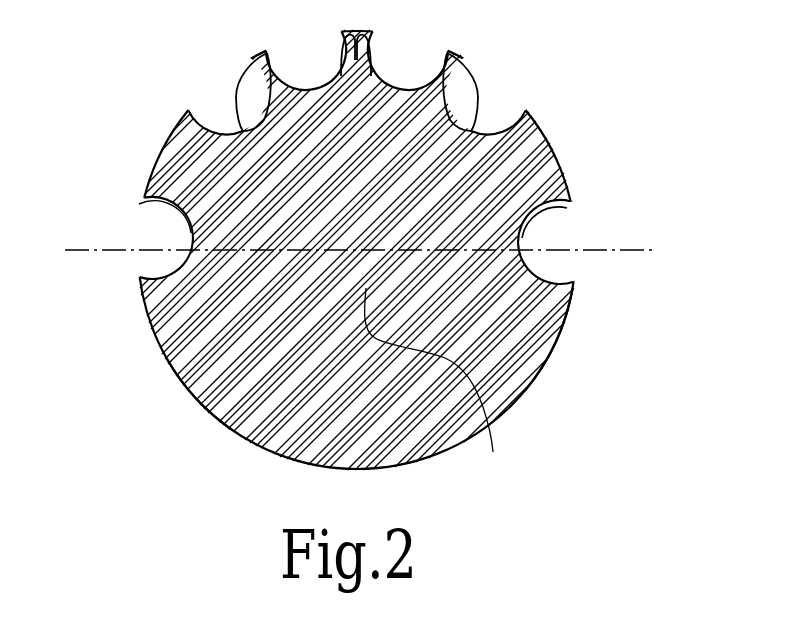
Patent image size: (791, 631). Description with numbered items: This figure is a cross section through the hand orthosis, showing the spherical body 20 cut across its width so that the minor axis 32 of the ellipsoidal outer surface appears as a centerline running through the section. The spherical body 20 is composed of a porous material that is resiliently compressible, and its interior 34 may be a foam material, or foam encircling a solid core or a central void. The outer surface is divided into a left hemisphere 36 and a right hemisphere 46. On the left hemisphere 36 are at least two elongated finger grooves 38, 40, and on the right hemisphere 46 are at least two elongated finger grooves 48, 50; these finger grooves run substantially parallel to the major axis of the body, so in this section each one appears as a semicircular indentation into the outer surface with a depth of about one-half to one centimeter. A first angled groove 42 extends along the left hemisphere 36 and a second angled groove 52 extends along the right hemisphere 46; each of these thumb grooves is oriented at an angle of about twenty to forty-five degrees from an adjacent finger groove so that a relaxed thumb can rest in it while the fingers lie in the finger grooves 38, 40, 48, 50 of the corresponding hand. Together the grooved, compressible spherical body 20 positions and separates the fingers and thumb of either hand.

The spherical body 20 is at (201, 431).
The minor axis 32 is at (614, 255).
The interior 34 is at (437, 383).
The left hemisphere 36 is at (143, 365).
The elongated finger groove 38 is at (226, 103).
The elongated finger groove 40 is at (316, 64).
The first angled groove 42 is at (150, 228).
The right hemisphere 46 is at (592, 330).
The elongated finger groove 48 is at (400, 61).
The elongated finger groove 50 is at (487, 97).
The second angled groove 52 is at (565, 268).